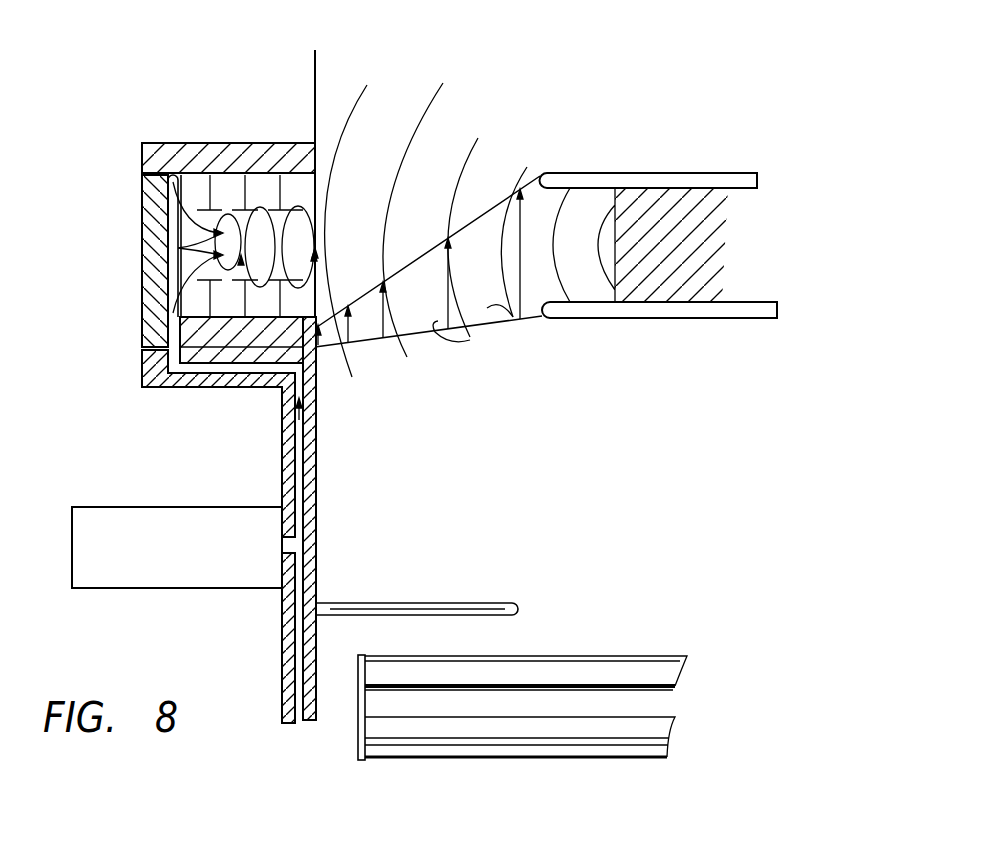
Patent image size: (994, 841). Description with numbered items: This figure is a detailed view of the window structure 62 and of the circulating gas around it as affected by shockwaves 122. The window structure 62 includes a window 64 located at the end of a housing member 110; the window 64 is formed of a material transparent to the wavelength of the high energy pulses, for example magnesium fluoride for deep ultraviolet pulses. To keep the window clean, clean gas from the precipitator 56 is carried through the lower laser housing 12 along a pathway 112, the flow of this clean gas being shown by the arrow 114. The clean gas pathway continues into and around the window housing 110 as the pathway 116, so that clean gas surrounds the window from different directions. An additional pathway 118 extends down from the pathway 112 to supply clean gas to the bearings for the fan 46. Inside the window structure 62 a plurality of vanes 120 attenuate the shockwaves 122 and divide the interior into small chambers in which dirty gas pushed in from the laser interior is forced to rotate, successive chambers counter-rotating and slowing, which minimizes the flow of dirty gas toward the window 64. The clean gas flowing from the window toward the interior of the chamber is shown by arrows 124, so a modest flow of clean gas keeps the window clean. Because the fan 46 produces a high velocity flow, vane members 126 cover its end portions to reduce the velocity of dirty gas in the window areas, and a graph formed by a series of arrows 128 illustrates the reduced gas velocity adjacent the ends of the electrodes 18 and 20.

The lower laser housing 12 is at (318, 580).
The electrode 18 is at (710, 173).
The electrode 20 is at (667, 318).
The fan 46 is at (600, 665).
The precipitator 56 is at (206, 505).
The window structure 62 is at (241, 130).
The window 64 is at (142, 295).
The housing member 110 is at (205, 143).
The pathway 112 is at (300, 495).
The arrow 114 is at (303, 410).
The pathway 116 is at (170, 178).
The additional pathway 118 is at (288, 668).
The vanes 120 is at (318, 290).
The acoustic wave fronts 122 is at (443, 83).
The arrows 124 is at (178, 248).
The vane members 126 is at (438, 603).
The arrows 128 is at (470, 338).